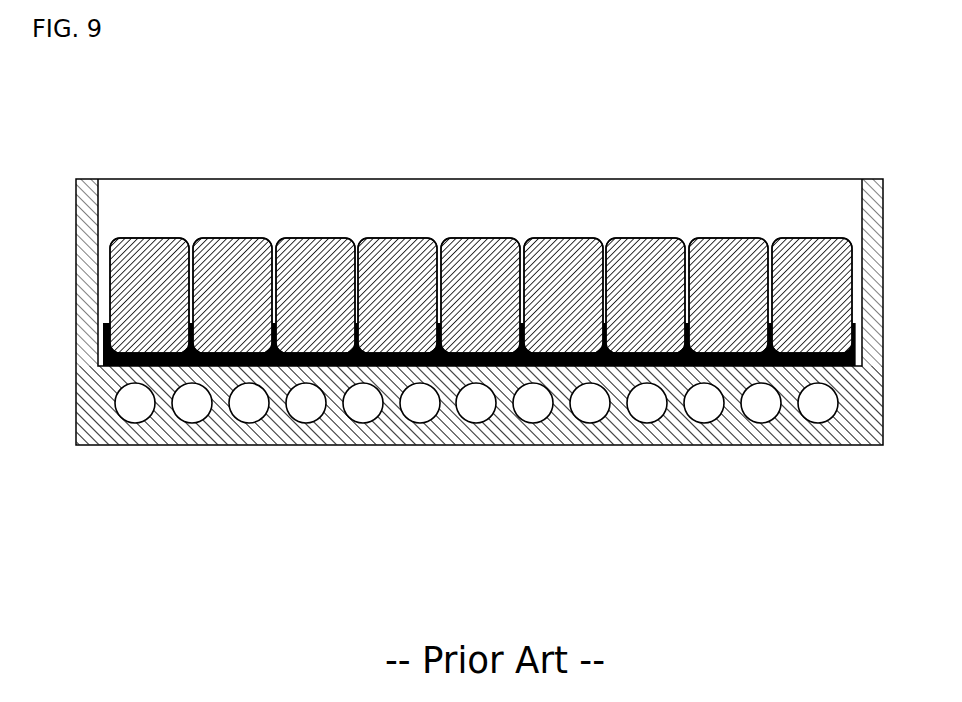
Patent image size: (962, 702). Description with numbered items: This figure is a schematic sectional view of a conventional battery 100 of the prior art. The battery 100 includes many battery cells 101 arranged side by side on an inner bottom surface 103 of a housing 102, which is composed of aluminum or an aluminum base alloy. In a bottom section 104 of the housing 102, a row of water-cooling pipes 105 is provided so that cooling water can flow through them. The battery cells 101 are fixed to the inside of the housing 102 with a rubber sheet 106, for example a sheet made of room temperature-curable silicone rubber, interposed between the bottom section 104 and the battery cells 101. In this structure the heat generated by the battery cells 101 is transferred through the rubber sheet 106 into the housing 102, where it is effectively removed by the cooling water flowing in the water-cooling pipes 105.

The battery 100 is at (839, 109).
The battery cells 101 is at (170, 238).
The housing 102 is at (76, 202).
The inner bottom surface 103 is at (100, 344).
The bottom section 104 is at (855, 437).
The water-cooling pipes 105 is at (249, 413).
The rubber sheet 106 is at (855, 353).